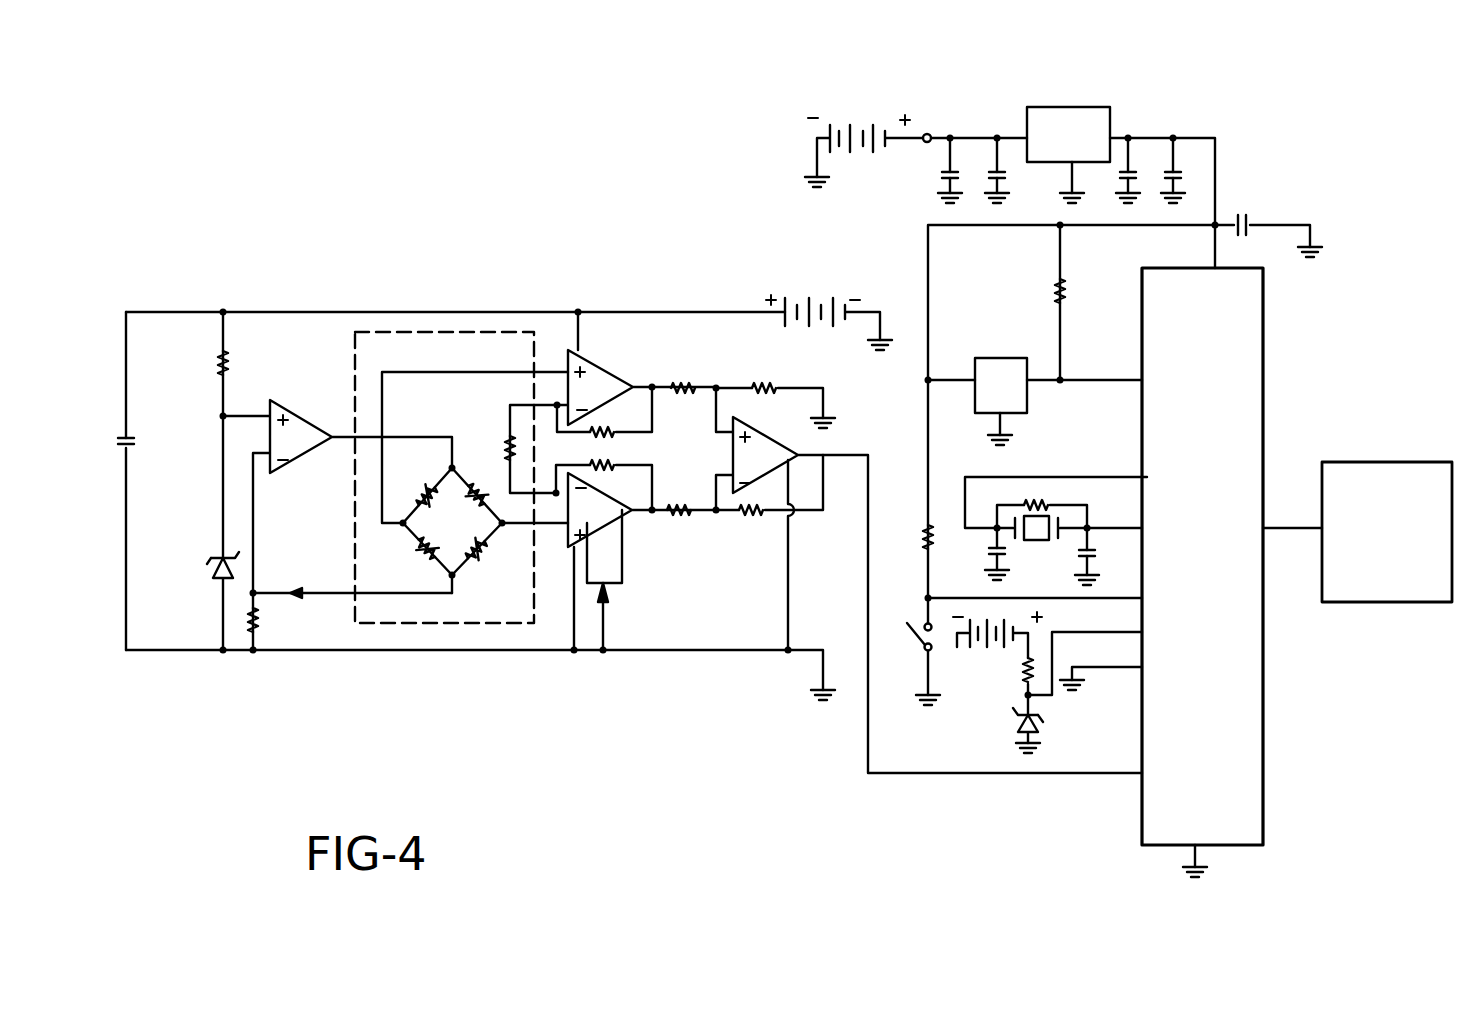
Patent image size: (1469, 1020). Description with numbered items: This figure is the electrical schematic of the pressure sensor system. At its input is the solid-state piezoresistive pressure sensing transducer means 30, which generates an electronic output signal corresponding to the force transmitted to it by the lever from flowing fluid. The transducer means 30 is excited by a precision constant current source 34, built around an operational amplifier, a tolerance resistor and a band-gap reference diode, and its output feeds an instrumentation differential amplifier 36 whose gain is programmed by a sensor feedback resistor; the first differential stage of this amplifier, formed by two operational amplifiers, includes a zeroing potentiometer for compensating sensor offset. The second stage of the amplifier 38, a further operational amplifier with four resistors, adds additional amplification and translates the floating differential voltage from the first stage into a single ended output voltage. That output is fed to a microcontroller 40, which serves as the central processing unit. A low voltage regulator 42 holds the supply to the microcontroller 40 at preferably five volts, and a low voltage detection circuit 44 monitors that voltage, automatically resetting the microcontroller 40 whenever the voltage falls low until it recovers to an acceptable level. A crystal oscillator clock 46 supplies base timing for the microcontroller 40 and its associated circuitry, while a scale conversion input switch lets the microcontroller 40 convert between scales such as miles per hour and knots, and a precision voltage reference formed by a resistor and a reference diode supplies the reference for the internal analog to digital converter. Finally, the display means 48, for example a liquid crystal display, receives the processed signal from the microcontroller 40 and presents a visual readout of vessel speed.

The pressure sensing transducer means 30 is at (412, 332).
The precision constant current source 34 is at (328, 300).
The instrumentation differential amplifier 36 is at (680, 300).
The second stage of the amplifier 38 is at (870, 292).
The microcontroller 40 is at (1230, 645).
The low voltage regulator 42 is at (797, 105).
The low voltage detection circuit 44 is at (920, 217).
The crystal oscillator clock 46 is at (1088, 469).
The display means 48 is at (1349, 462).